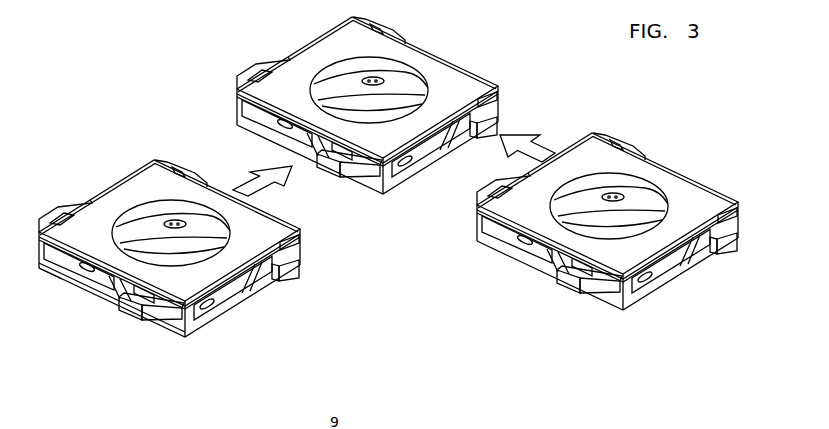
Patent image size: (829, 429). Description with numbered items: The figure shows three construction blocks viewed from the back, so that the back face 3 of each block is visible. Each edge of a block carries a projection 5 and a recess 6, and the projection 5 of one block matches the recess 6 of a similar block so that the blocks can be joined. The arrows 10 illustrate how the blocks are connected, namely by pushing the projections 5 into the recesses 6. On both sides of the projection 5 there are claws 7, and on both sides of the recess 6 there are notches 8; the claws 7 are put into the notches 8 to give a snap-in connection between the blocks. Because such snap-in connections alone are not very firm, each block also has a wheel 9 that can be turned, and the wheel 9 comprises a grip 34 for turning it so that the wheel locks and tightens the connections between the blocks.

The back face 3 is at (299, 97).
The projection 5 is at (283, 62).
The recess 6 is at (412, 177).
The claw 7 is at (132, 286).
The notch 8 is at (40, 268).
The wheel 9 is at (413, 78).
The arrows 10 is at (282, 186).
The grip 34 is at (120, 210).